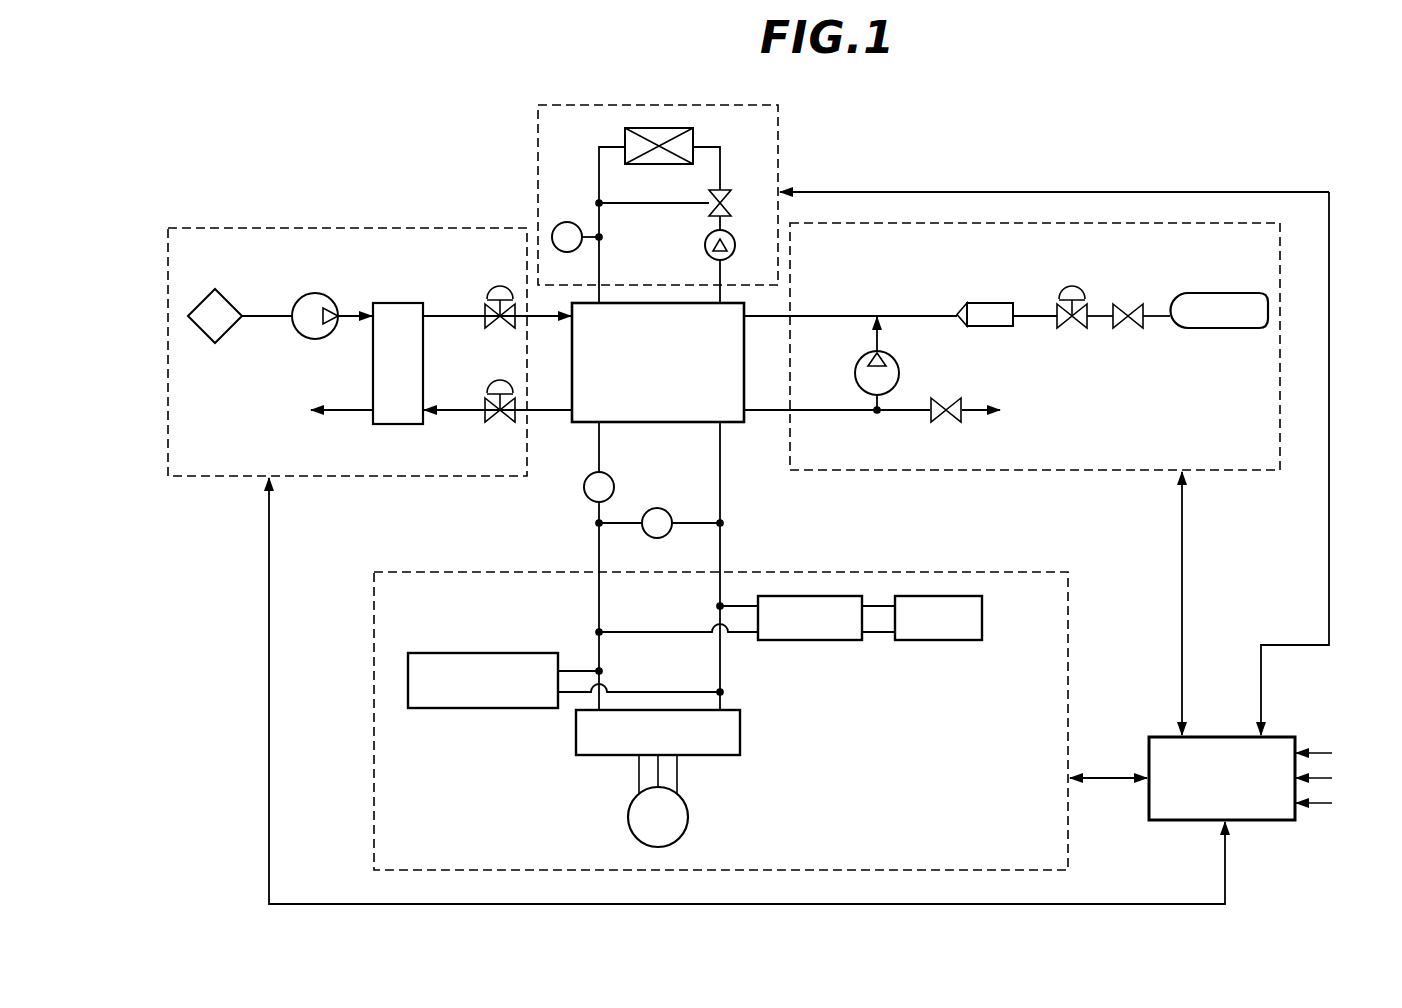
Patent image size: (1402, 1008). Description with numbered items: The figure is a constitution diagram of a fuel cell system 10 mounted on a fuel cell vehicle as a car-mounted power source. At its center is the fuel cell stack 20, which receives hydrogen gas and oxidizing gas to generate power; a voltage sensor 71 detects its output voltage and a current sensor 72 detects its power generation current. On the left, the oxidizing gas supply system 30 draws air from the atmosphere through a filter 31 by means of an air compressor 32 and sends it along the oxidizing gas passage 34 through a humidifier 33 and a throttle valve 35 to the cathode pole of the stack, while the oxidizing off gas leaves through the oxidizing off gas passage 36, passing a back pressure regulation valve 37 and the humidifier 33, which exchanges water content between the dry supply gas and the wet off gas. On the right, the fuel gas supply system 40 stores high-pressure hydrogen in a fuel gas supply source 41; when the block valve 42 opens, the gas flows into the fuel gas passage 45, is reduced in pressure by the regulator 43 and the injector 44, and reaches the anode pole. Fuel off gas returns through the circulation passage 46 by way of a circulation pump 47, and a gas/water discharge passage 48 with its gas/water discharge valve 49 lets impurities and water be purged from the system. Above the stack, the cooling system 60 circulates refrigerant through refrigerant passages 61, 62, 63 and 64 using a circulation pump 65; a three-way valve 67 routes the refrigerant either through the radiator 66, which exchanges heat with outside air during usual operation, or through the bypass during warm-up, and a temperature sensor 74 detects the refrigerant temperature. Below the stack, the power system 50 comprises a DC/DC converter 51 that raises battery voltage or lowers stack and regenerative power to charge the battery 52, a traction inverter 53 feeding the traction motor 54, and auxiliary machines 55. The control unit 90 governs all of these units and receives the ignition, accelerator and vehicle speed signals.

The fuel cell system 10 is at (1050, 114).
The fuel cell stack 20 is at (580, 425).
The oxidizing gas supply system 30 is at (322, 228).
The filter 31 is at (232, 300).
The air compressor 32 is at (319, 294).
The humidifier 33 is at (398, 303).
The oxidizing gas passage 34 is at (440, 316).
The throttle valve 35 is at (498, 288).
The oxidizing off gas passage 36 is at (440, 410).
The back pressure regulation valve 37 is at (498, 382).
The fuel gas supply system 40 is at (1215, 470).
The fuel gas supply source 41 is at (1213, 293).
The block valve 42 is at (1130, 302).
The regulator 43 is at (1072, 284).
The injector 44 is at (988, 303).
The fuel gas passage 45 is at (812, 316).
The circulation passage 46 is at (805, 410).
The circulation pump 47 is at (898, 375).
The gas/water discharge passage 48 is at (975, 410).
The gas/water discharge valve 49 is at (950, 422).
The power system 50 is at (1068, 605).
The DC/DC converter 51 is at (781, 643).
The battery 52 is at (984, 622).
The traction inverter 53 is at (742, 735).
The traction motor 54 is at (689, 812).
The auxiliary machines 55 is at (498, 653).
The cooling system 60 is at (778, 114).
The refrigerant passage 61 is at (722, 268).
The refrigerant passage 62 is at (684, 205).
The refrigerant passage 63 is at (600, 250).
The refrigerant passage 64 is at (712, 147).
The circulation pump 65 is at (731, 238).
The radiator 66 is at (662, 166).
The three-way valve 67 is at (728, 190).
The voltage sensor 71 is at (668, 535).
The current sensor 72 is at (590, 501).
The temperature sensor 74 is at (571, 222).
The control unit 90 is at (1278, 737).